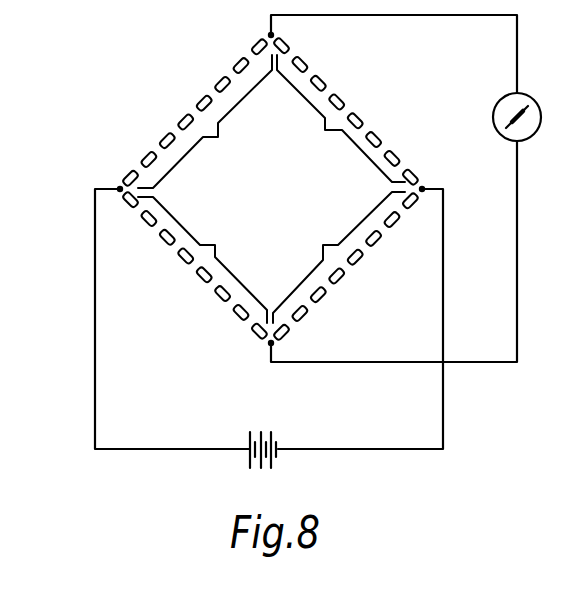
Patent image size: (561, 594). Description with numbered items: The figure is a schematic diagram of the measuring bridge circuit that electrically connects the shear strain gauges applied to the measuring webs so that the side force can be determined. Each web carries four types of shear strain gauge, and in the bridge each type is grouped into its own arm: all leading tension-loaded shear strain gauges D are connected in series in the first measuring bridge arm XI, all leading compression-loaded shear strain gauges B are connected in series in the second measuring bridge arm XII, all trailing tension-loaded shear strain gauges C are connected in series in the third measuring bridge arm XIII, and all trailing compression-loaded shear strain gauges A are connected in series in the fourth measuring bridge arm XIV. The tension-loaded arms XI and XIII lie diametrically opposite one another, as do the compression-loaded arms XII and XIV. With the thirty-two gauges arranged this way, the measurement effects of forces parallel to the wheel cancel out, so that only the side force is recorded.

The shear strain gauge of type A is at (220, 80).
The shear strain gauge of type B is at (323, 298).
The shear strain gauge of type C is at (322, 80).
The shear strain gauge of type D is at (225, 297).
The first measuring bridge arm XI is at (202, 260).
The second measuring bridge arm XII is at (339, 257).
The third measuring bridge arm XIII is at (341, 118).
The fourth measuring bridge arm XIV is at (205, 121).